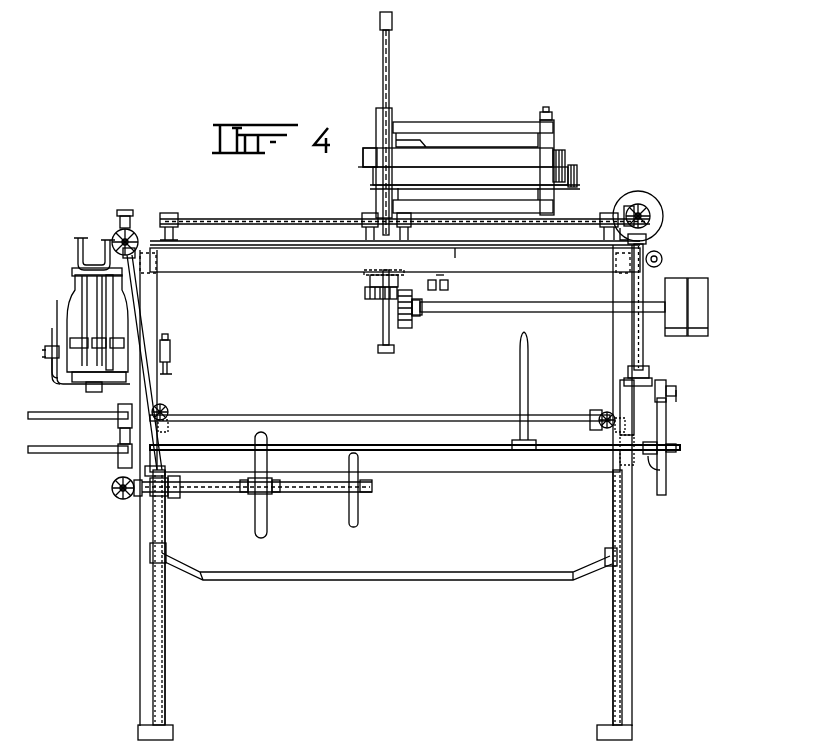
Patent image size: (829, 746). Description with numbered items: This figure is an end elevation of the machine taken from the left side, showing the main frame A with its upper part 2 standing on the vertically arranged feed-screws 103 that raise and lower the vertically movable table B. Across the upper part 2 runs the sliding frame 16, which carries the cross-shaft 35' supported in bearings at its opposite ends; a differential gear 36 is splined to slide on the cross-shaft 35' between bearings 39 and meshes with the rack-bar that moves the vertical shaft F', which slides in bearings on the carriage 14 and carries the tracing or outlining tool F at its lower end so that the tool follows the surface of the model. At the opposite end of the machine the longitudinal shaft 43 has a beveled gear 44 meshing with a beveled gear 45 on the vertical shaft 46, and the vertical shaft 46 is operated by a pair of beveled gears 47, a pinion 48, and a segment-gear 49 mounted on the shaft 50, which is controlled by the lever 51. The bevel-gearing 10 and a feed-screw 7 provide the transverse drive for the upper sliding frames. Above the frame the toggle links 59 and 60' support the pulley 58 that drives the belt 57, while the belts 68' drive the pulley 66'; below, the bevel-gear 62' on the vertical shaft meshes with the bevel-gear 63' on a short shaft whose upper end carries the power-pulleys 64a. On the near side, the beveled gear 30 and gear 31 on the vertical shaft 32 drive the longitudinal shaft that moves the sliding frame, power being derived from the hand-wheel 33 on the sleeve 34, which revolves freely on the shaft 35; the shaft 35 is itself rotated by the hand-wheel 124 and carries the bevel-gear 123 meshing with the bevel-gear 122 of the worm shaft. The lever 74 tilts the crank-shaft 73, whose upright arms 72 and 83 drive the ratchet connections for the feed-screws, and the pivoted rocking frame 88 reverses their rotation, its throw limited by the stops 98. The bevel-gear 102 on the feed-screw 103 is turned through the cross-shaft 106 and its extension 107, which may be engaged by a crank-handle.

The upper part of frame 2 is at (395, 257).
The sliding frame 16 is at (466, 261).
The main frame A is at (632, 524).
The vertically-movable table B is at (392, 580).
The vertically-arranged feed-screw 103 is at (165, 648).
The cross-shaft 35' is at (405, 216).
The bearings 39 is at (362, 214).
The differential gear 36 is at (408, 227).
The vertical shaft F' is at (396, 123).
The link 60' is at (492, 154).
The link 59 is at (554, 130).
The belts 68' is at (458, 158).
The pulley 66' is at (578, 157).
The belt 57 is at (470, 176).
The pulley 58 is at (577, 170).
The gear 31 is at (118, 217).
The beveled gear 30 is at (114, 238).
The lever 74 is at (78, 250).
The upright arm 72 is at (78, 300).
The upright arm 83 is at (113, 300).
The pivoted rocking frame 88 is at (57, 330).
The crank-shaft 73 is at (47, 352).
The vertical shaft 32 is at (146, 330).
The stops 98 is at (170, 350).
The extension 107 is at (78, 420).
The bevel-gear 122 is at (110, 488).
The bevel-gear 123 is at (132, 498).
The bevel-gear 102 is at (163, 432).
The cross-shaft 106 is at (303, 418).
The shaft 50 is at (455, 445).
The lever 51 is at (519, 383).
The sleeve 34 is at (198, 500).
The hand-wheel 33 is at (255, 534).
The shaft 35 is at (310, 474).
The hand-wheel 124 is at (352, 527).
The carriage 14 is at (368, 280).
The bevel-gear 62' is at (359, 302).
The bevel-gear 63' is at (414, 317).
The tracing or outlining tool F is at (370, 311).
The feed-screw 7 is at (436, 287).
The beveled gear 44 is at (655, 200).
The longitudinal shaft 43 is at (650, 214).
The beveled gear 45 is at (648, 230).
The bevel-gearing 10 is at (660, 254).
The power-pulleys 64a is at (688, 280).
The vertical shaft 46 is at (643, 352).
The beveled gears 47 is at (650, 378).
The pinion 48 is at (666, 384).
The segment-gear 49 is at (668, 424).